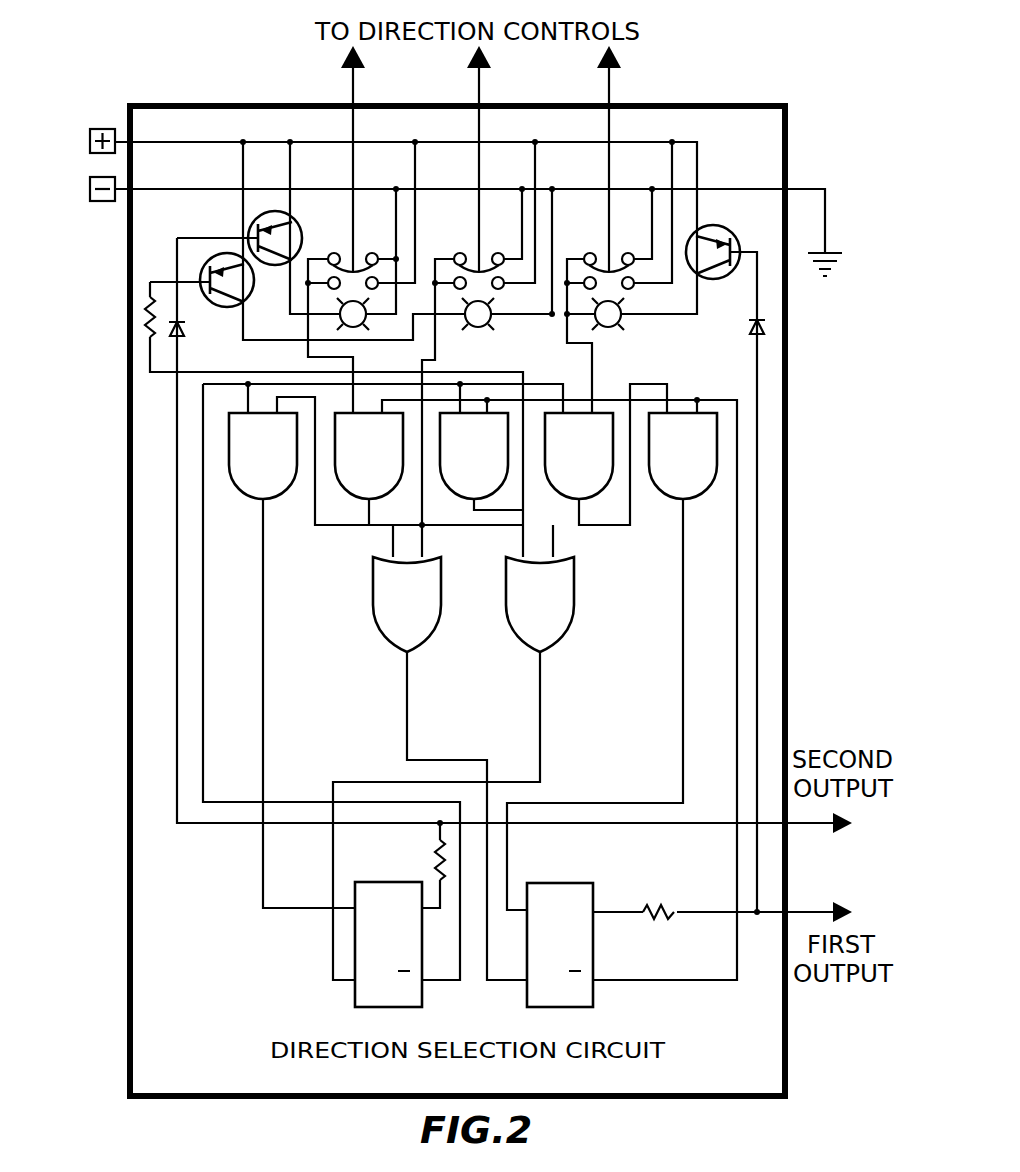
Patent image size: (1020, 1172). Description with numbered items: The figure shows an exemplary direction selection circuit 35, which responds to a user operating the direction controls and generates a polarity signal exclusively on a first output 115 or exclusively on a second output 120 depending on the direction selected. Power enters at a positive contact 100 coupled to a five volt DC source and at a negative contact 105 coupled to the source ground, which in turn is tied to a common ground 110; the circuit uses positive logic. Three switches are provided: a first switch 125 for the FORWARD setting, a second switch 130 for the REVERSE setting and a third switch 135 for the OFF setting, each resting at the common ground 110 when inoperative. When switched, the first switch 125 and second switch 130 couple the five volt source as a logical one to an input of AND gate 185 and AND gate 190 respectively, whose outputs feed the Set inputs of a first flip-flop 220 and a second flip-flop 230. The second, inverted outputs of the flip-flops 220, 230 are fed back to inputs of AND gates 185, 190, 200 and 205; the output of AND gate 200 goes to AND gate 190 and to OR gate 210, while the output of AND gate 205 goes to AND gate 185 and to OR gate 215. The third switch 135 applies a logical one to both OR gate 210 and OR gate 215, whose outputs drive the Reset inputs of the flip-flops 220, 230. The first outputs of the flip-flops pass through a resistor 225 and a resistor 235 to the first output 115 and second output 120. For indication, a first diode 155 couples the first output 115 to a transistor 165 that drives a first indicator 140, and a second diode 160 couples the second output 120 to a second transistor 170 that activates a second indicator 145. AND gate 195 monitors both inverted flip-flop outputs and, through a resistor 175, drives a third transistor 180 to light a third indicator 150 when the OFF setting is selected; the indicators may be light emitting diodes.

The direction selection circuit 35 is at (788, 1063).
The positive contact 100 is at (103, 128).
The negative contact 105 is at (100, 201).
The common ground 110 is at (825, 286).
The first output 115 is at (840, 905).
The second output 120 is at (840, 838).
The first switch 125 is at (618, 254).
The second switch 130 is at (363, 254).
The third switch 135 is at (488, 254).
The first indicator 140 is at (616, 325).
The second indicator 145 is at (366, 322).
The third indicator 150 is at (488, 325).
The first diode 155 is at (764, 335).
The second diode 160 is at (170, 337).
The transistor 165 is at (722, 228).
The second transistor 170 is at (297, 216).
The resistor 175 is at (145, 313).
The third transistor 180 is at (205, 263).
The AND gate 185 is at (694, 503).
The AND gate 190 is at (249, 502).
The AND gate 195 is at (456, 500).
The AND gate 200 is at (351, 505).
The AND gate 205 is at (596, 506).
The OR gate 210 is at (396, 646).
The OR gate 215 is at (552, 646).
The first flip-flop 220 is at (596, 999).
The resistor 225 is at (652, 905).
The second flip-flop 230 is at (425, 999).
The resistor 235 is at (435, 856).